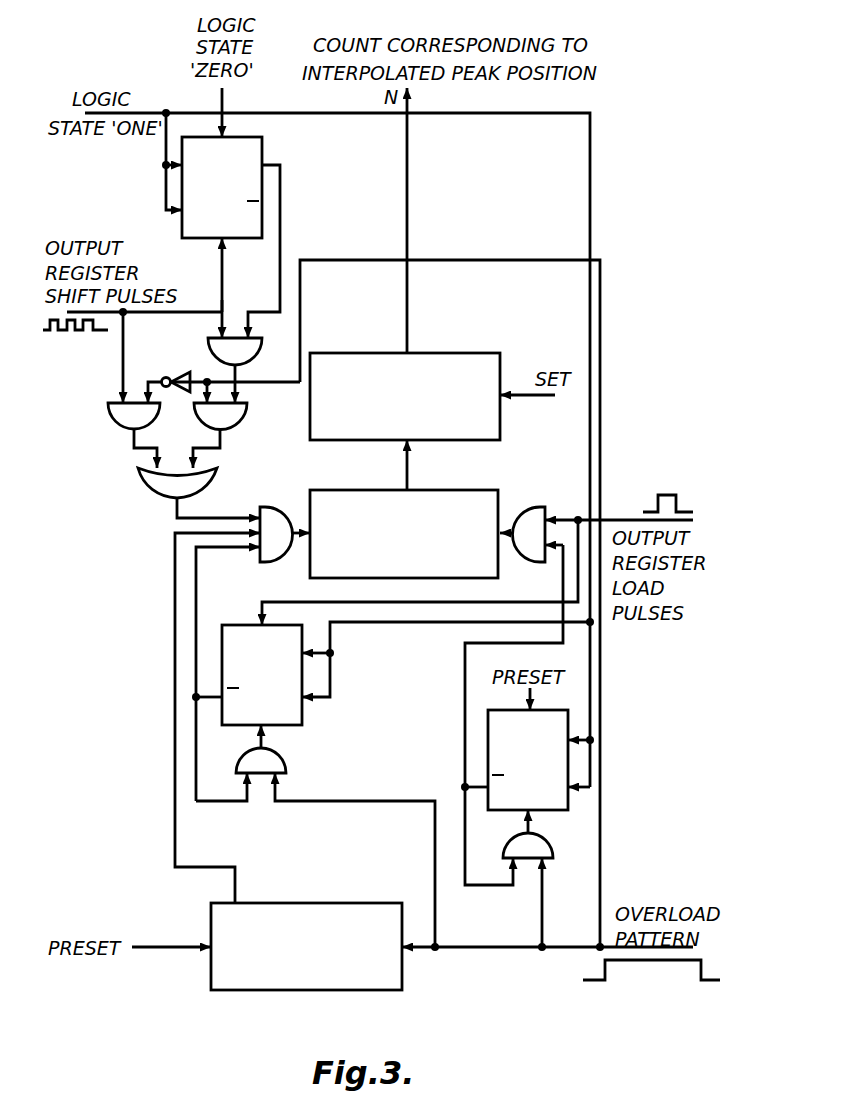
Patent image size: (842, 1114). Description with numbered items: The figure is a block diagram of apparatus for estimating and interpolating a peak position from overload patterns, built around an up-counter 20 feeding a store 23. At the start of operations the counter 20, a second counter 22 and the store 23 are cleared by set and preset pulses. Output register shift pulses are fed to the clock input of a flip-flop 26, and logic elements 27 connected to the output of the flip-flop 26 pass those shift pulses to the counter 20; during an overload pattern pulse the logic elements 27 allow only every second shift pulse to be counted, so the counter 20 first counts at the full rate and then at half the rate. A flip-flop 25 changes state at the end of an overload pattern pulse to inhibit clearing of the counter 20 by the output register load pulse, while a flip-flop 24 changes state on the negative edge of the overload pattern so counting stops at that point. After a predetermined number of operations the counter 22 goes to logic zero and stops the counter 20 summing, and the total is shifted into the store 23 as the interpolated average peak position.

The counter 20 is at (487, 490).
The counter 22 is at (390, 903).
The store 23 is at (490, 353).
The flip-flop 24 is at (296, 727).
The flip-flop 25 is at (486, 722).
The flip-flop 26 is at (258, 146).
The logic elements 27 is at (247, 431).